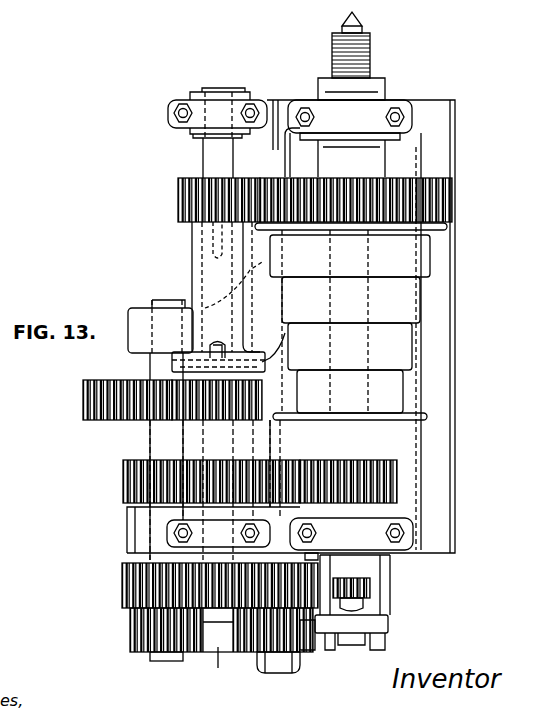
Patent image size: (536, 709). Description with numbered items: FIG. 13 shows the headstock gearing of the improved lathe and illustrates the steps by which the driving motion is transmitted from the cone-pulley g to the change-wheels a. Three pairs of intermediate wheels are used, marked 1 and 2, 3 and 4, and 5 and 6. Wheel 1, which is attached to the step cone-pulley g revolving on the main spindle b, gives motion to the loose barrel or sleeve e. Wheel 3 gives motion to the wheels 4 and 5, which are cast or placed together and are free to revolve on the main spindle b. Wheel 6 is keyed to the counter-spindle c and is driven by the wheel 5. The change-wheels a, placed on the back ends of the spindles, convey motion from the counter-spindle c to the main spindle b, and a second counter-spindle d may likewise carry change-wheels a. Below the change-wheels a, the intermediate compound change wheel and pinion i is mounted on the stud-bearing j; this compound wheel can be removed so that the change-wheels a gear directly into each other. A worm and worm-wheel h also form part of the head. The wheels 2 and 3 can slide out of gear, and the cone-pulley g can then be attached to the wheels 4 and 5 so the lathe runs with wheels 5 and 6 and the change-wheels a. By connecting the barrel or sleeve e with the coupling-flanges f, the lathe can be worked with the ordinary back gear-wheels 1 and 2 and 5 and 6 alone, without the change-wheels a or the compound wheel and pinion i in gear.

The intermediate wheel 1 is at (383, 462).
The intermediate wheel 2 is at (147, 482).
The intermediate wheel 3 is at (243, 400).
The intermediate wheel 4 is at (100, 400).
The intermediate wheel 5 is at (190, 200).
The intermediate wheel 6 is at (440, 200).
The change-wheels a is at (135, 578).
The main spindle b is at (352, 602).
The counter-spindle c is at (218, 413).
The second counter-spindle d is at (167, 656).
The loose barrel or sleeve e is at (227, 337).
The coupling-flanges f is at (176, 362).
The cone-pulley g is at (350, 327).
The worm and worm-wheel h is at (310, 560).
The intermediate compound change wheel and pinion i is at (305, 628).
The stud-bearing j is at (280, 673).